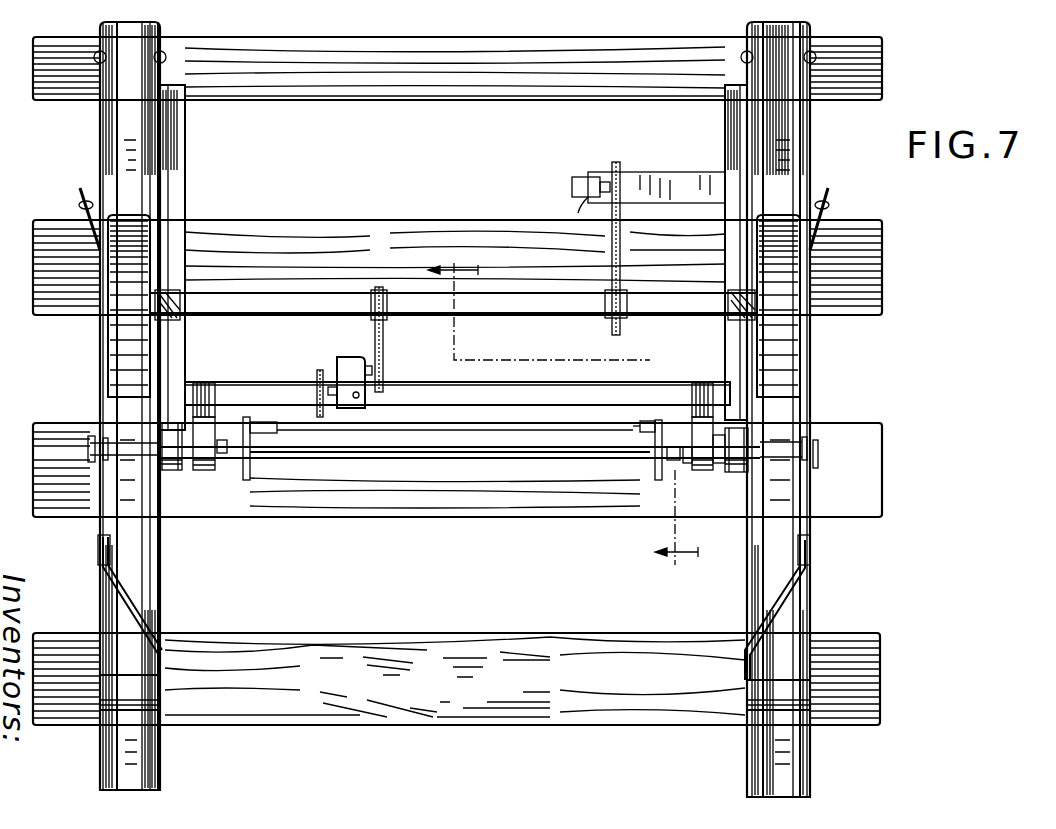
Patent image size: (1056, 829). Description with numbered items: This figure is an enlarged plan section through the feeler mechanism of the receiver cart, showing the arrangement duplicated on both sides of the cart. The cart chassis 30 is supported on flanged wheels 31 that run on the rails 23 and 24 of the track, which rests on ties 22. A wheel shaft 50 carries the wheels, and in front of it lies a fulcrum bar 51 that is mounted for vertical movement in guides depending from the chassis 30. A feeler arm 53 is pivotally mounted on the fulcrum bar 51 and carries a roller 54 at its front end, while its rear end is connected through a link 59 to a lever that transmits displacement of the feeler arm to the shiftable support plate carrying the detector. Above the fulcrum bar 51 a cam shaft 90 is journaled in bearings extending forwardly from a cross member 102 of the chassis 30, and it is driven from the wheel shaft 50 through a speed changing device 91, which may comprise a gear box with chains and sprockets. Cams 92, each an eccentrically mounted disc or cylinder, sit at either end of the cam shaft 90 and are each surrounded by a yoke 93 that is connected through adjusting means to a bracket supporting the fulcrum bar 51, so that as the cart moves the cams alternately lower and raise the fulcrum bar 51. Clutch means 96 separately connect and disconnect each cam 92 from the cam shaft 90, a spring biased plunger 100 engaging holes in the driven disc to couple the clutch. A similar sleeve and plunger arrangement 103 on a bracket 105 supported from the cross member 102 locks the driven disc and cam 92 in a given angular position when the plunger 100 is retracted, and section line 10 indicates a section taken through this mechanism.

The chain drive / section line 10 is at (534, 373).
The ties 22 is at (430, 635).
The rail 23 is at (775, 748).
The rail 24 is at (140, 748).
The cart chassis 30 is at (188, 185).
The flanged wheels 31 is at (108, 340).
The wheel shaft 50 is at (272, 300).
The fulcrum bar 51 is at (130, 450).
The feeler arm 53 is at (103, 585).
The roller 54 is at (140, 692).
The link 59 is at (78, 200).
The cam shaft 90 is at (492, 462).
The speed changing device 91 is at (325, 348).
The cams 92 is at (156, 435).
The yoke 93 is at (205, 470).
The clutch means 96 is at (260, 464).
The spring biased plunger 100 is at (268, 432).
The cross member 102 is at (458, 390).
The sleeve and plunger arrangement 103 is at (224, 455).
The bracket 105 is at (212, 405).